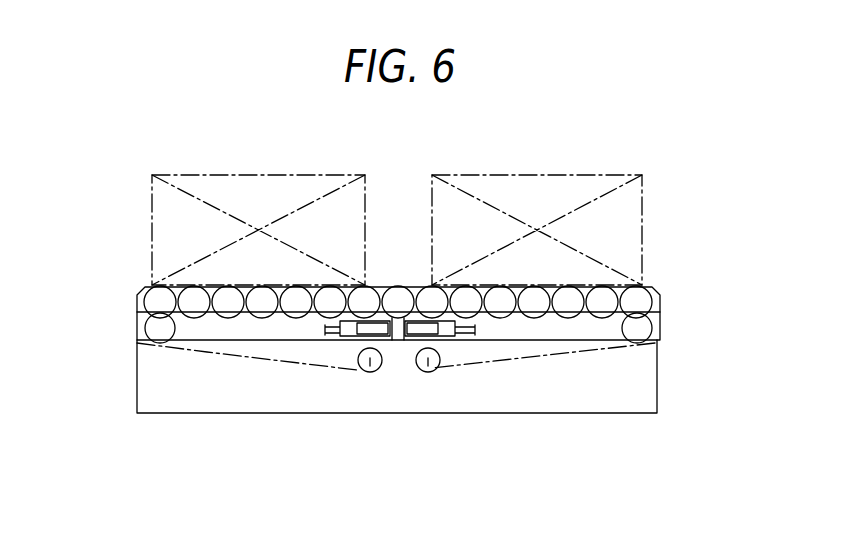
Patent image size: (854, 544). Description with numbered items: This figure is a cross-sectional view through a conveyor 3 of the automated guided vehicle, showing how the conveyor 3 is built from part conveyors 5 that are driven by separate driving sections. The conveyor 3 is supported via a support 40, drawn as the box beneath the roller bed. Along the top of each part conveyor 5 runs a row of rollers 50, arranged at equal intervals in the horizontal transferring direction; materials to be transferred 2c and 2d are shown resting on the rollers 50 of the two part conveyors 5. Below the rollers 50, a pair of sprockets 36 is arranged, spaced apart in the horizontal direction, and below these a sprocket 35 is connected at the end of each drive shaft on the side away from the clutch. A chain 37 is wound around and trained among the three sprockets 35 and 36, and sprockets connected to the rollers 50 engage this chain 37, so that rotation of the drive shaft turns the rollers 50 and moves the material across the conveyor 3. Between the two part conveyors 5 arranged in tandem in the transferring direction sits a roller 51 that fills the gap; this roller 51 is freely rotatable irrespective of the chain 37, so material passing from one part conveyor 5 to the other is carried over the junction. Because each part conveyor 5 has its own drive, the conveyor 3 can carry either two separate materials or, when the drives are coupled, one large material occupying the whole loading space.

The material to be transferred 2c is at (152, 212).
The material to be transferred 2d is at (642, 210).
The conveyor 3 is at (398, 352).
The part conveyor 5 is at (116, 299).
The sprocket 35 is at (370, 372).
The sprocket 36 is at (150, 338).
The chain 37 is at (207, 352).
The support 40 is at (660, 385).
The roller 50 is at (140, 287).
The roller 51 is at (398, 286).